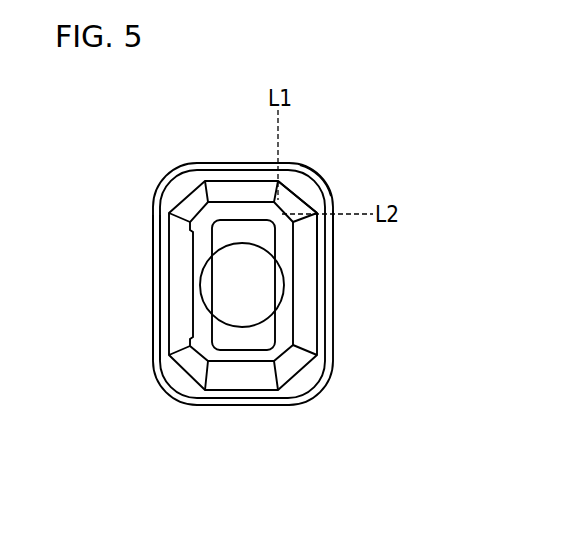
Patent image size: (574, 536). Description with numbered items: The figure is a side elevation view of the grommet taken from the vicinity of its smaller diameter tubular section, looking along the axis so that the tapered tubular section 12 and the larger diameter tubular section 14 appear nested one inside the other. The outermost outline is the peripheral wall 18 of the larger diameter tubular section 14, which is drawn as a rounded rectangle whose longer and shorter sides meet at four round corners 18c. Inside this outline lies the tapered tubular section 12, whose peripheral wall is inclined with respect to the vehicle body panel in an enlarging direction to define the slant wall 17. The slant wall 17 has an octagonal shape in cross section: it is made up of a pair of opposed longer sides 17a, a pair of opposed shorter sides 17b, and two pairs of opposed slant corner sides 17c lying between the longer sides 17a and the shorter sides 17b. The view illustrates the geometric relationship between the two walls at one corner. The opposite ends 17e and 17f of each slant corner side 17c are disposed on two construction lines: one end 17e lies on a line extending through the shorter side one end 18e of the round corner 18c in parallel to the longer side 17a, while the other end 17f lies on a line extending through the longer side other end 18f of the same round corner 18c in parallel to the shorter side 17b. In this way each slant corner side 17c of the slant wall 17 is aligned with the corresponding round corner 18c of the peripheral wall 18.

The tapered tubular section 12 is at (152, 289).
The larger diameter tubular section 14 is at (152, 244).
The slant wall 17 is at (308, 284).
The longer side 17a is at (317, 248).
The shorter side 17b is at (230, 180).
The slant corner side 17c is at (300, 190).
The end of slant corner side 17e is at (278, 180).
The other end of slant corner side 17f is at (318, 212).
The peripheral wall 18 is at (333, 328).
The round corner 18c is at (316, 179).
The shorter side one end of round corner 18e is at (282, 163).
The longer side other end of round corner 18f is at (330, 218).